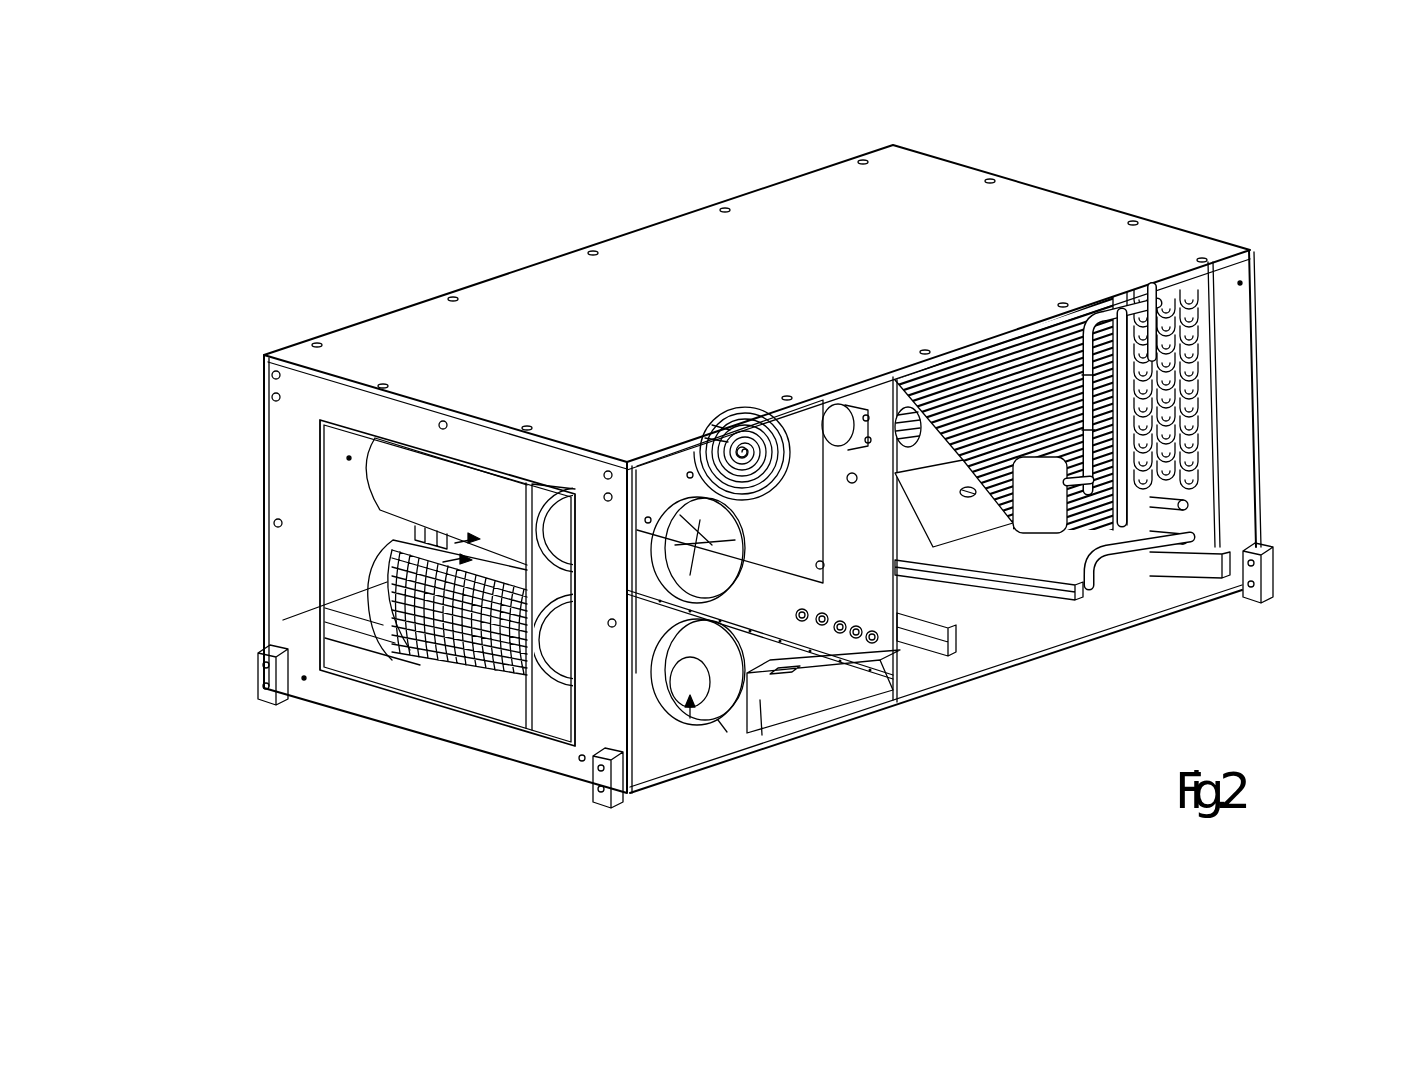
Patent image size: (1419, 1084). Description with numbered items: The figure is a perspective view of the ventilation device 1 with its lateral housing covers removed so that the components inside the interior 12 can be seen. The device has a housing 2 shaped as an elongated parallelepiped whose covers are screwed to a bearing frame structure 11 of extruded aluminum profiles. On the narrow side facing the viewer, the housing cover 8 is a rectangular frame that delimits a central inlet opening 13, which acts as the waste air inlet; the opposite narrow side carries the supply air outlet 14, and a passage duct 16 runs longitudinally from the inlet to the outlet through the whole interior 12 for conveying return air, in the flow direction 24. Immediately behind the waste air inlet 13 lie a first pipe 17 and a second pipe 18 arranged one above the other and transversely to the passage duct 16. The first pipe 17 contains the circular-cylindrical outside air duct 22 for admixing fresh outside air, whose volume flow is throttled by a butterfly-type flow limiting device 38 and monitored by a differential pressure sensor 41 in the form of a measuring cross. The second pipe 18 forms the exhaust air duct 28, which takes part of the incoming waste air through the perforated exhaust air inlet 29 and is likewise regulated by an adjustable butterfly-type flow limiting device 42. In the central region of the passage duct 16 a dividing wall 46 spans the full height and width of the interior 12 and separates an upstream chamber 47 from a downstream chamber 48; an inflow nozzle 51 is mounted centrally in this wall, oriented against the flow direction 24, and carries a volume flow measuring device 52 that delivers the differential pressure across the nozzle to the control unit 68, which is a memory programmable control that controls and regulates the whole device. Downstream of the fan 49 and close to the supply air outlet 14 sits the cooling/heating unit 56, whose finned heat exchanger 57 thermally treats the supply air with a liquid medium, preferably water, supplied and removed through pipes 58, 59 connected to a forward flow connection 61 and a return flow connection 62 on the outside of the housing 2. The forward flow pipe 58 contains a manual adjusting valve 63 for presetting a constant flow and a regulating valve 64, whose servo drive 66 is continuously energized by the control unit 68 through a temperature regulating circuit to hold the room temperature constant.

The ventilation device 1 is at (333, 240).
The housing 2 is at (247, 338).
The housing cover 8 is at (290, 450).
The frame structure 11 is at (342, 652).
The interior 12 is at (978, 368).
The inlet opening 13 is at (504, 700).
The supply air outlet 14 is at (1213, 313).
The passage duct 16 is at (407, 543).
The first pipe 17 is at (407, 467).
The second pipe 18 is at (490, 567).
The outside air duct 22 is at (678, 550).
The flow direction 24 is at (353, 605).
The exhaust air duct 28 is at (687, 717).
The exhaust air inlet 29 is at (428, 655).
The flow limiting device 38 is at (686, 520).
The differential pressure sensor 41 is at (716, 440).
The flow limiting device 42 is at (693, 680).
The dividing wall 46 is at (893, 663).
The upstream chamber 47 is at (750, 612).
The downstream chamber 48 is at (977, 634).
The fan 49 is at (796, 418).
The inflow nozzle 51 is at (793, 500).
The volume flow measuring device 52 is at (858, 405).
The cooling/heating unit 56 is at (1208, 436).
The heat exchanger 57 is at (1050, 333).
The pipe 58 is at (1123, 313).
The pipe 59 is at (1100, 523).
The forward flow connection 61 is at (1213, 502).
The return flow connection 62 is at (1270, 565).
The manual adjusting valve 63 is at (1210, 270).
The regulating valve 64 is at (1217, 393).
The servo drive 66 is at (1040, 533).
The control unit 68 is at (787, 675).